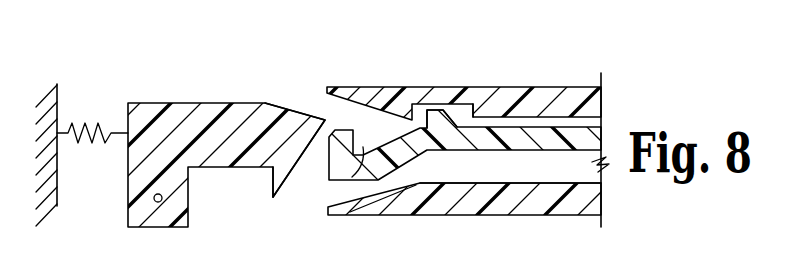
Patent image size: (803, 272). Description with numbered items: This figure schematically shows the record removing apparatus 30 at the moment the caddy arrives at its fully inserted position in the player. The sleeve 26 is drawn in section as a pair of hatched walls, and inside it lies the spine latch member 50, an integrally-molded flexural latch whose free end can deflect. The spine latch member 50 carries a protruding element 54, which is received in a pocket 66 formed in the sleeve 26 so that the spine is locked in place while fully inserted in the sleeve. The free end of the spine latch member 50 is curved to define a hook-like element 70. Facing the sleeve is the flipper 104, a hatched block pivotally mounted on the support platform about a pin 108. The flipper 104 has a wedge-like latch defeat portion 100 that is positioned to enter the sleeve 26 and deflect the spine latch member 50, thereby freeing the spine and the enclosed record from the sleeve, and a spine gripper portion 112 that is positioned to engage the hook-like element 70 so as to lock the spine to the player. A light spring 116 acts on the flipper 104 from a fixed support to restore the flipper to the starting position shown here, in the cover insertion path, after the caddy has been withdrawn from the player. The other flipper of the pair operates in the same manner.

The record removing apparatus 30 is at (186, 29).
The light spring 116 is at (83, 122).
The flipper 104 is at (176, 114).
The wedge-like latch defeat portion 100 is at (291, 109).
The spine gripper portion 112 is at (272, 186).
The pin 108 is at (163, 200).
The hook-like element 70 is at (338, 180).
The protruding element 54 is at (435, 110).
The pocket 66 is at (460, 107).
The sleeve 26 is at (536, 87).
The spine latch member 50 is at (408, 160).